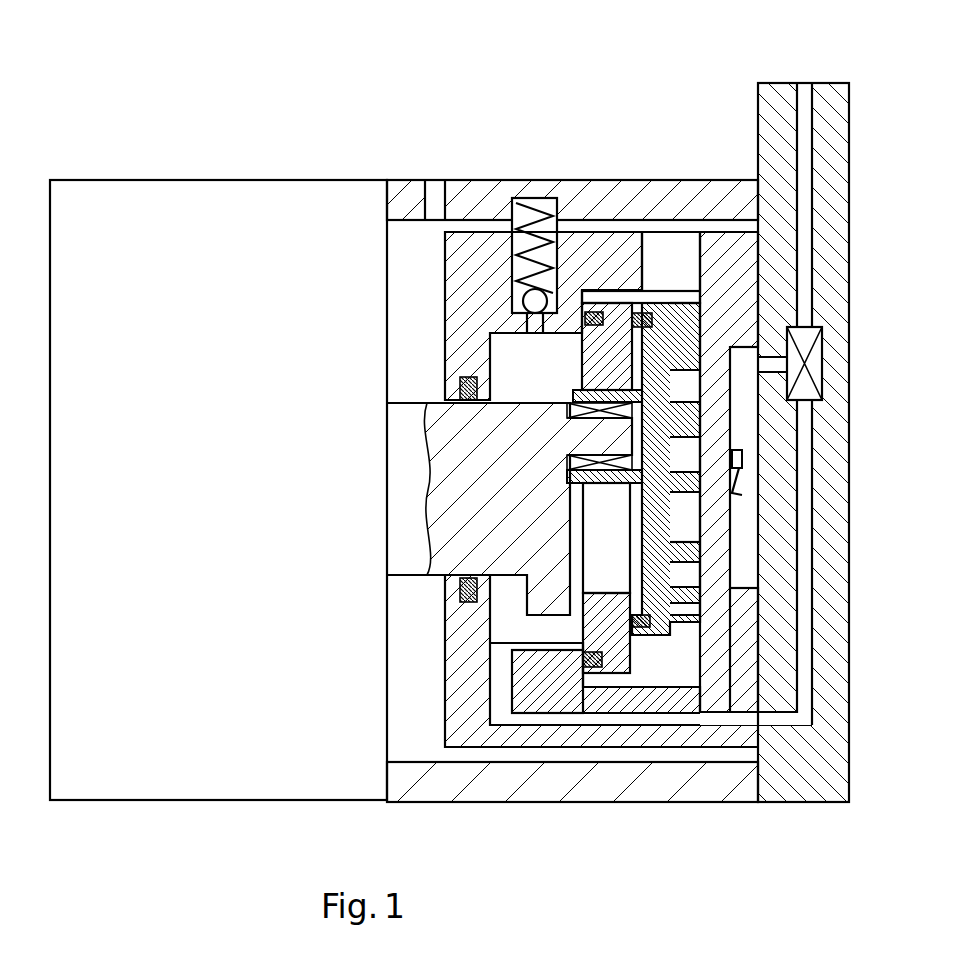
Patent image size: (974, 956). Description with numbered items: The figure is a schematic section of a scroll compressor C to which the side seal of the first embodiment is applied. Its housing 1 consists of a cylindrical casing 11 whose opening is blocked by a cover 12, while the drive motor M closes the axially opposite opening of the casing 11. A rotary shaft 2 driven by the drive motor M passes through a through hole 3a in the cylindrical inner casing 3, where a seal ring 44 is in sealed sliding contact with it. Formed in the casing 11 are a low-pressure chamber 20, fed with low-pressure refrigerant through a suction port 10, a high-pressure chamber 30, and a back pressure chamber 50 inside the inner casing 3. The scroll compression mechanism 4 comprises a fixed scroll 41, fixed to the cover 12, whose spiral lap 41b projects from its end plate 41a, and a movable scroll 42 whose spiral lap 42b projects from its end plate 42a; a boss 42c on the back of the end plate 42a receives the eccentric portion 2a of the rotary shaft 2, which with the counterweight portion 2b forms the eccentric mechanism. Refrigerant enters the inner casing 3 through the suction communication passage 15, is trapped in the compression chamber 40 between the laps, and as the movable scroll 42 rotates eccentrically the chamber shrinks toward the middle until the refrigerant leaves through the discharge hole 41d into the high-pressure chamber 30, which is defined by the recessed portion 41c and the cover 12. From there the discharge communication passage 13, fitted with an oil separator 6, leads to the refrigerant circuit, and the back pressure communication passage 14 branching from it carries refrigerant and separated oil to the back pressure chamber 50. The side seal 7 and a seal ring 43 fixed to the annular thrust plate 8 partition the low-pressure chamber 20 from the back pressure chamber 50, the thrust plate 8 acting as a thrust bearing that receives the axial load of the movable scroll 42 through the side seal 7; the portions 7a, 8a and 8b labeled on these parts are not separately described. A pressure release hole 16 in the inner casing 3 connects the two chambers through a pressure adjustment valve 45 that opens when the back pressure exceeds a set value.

The housing 1 is at (695, 880).
The rotary shaft 2 is at (408, 577).
The eccentric portion 2a is at (608, 440).
The counterweight portion 2b is at (470, 602).
The inner casing 3 is at (489, 219).
The through hole 3a is at (448, 405).
The scroll compression mechanism 4 is at (745, 87).
The oil separator 6 is at (825, 343).
The side seal 7 is at (618, 300).
The holder bottom 7a is at (645, 672).
The thrust plate 8 is at (600, 290).
The sleeve seal 8a is at (690, 637).
The sleeve seal 8b is at (588, 668).
The suction port 10 is at (431, 203).
The casing 11 is at (718, 792).
The cover 12 is at (795, 790).
The discharge communication passage 13 is at (805, 98).
The back pressure communication passage 14 is at (775, 718).
The suction communication passage 15 is at (640, 305).
The pressure release hole 16 is at (527, 347).
The low-pressure chamber 20 is at (402, 182).
The high-pressure chamber 30 is at (740, 588).
The compression chamber 40 is at (745, 473).
The fixed scroll 41 is at (737, 250).
The end plate 41a is at (735, 240).
The spiral lap 41b is at (745, 452).
The recessed portion 41c is at (775, 365).
The discharge hole 41d is at (742, 500).
The movable scroll 42 is at (663, 303).
The end plate 42a is at (690, 318).
The spiral lap 42b is at (702, 548).
The boss 42c is at (598, 486).
The seal ring 43 is at (604, 705).
The seal ring 44 is at (458, 388).
The pressure adjustment valve 45 is at (530, 200).
The back pressure chamber 50 is at (510, 367).
The scroll compressor C is at (192, 168).
The drive motor M is at (217, 770).